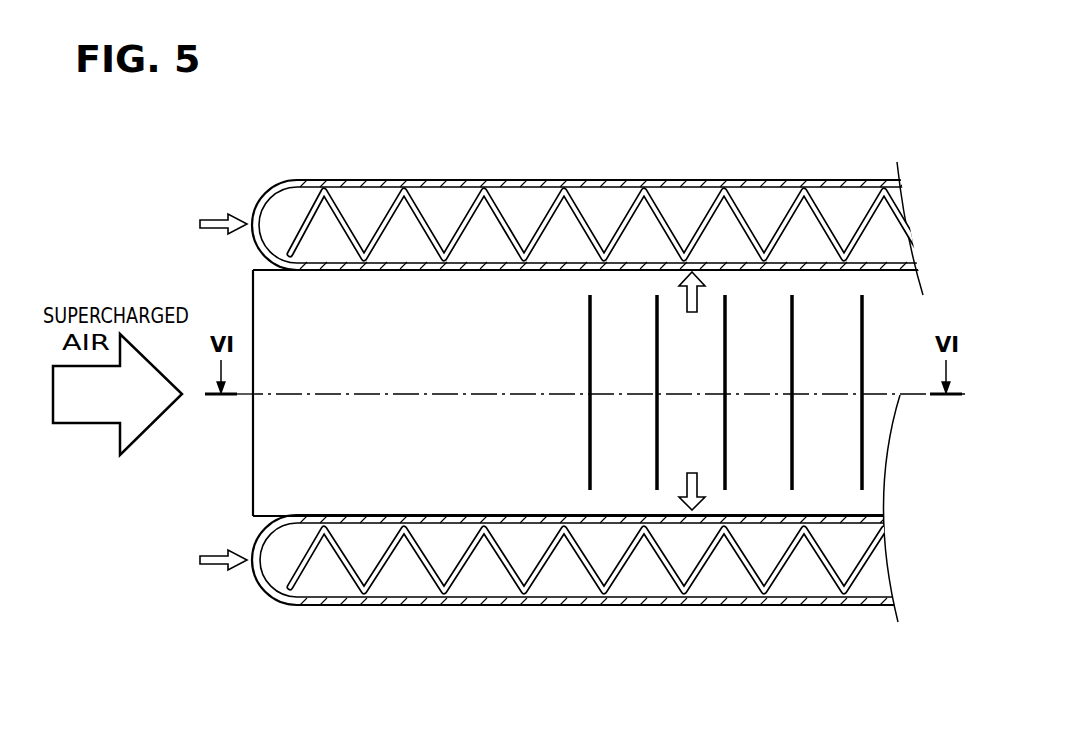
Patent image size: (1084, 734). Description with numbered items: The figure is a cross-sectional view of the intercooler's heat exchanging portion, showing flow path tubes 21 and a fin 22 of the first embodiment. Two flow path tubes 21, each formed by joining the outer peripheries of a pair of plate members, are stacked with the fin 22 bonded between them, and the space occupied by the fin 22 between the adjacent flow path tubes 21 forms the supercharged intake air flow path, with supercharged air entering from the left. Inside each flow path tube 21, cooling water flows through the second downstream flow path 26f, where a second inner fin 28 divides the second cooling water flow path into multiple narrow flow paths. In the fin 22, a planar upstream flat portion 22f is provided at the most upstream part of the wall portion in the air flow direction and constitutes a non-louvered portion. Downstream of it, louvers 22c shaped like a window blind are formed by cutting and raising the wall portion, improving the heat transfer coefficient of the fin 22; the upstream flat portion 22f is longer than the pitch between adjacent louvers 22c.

The flow path tube 21 is at (530, 180).
The fin 22 is at (246, 473).
The louver 22c is at (592, 332).
The upstream flat portion 22f is at (400, 330).
The second downstream flow path 26f is at (447, 213).
The second inner fin 28 is at (343, 208).